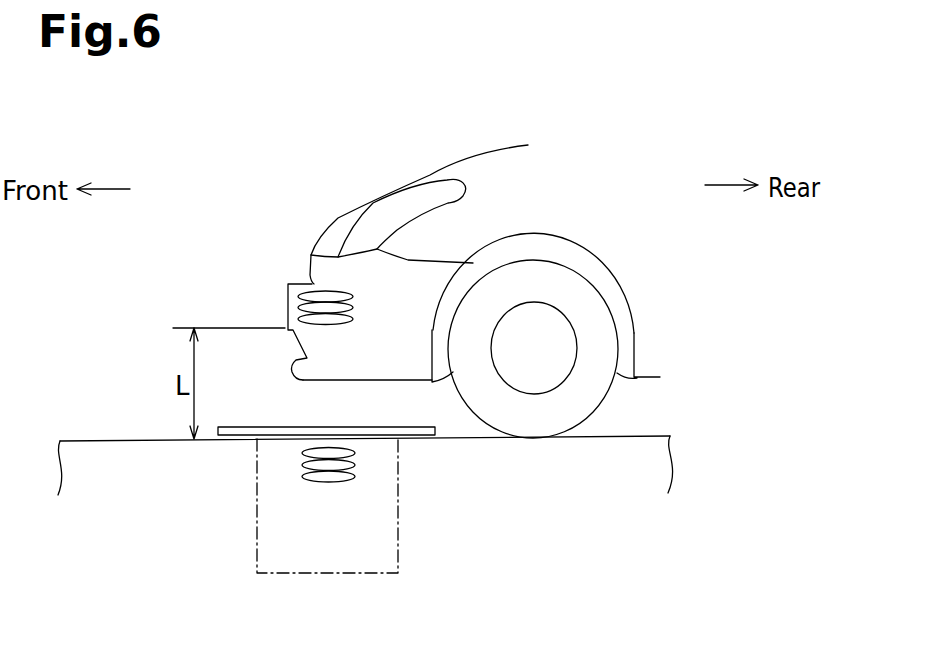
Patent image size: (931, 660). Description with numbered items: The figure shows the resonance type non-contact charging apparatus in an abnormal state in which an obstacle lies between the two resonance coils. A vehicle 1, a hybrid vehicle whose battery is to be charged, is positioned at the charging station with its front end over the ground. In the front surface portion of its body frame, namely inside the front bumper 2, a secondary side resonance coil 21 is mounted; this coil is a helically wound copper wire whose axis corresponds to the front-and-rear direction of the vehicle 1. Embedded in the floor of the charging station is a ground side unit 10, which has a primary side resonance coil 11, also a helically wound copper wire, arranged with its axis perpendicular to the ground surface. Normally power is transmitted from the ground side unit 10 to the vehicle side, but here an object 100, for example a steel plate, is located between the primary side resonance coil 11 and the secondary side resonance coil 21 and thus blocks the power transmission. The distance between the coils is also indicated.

The vehicle 1 is at (473, 152).
The front bumper (vehicle-side power receiving unit) 2 is at (287, 305).
The secondary side resonance coil 21 is at (310, 281).
The object 100 is at (238, 427).
The ground side unit 10 is at (398, 537).
The primary side resonance coil 11 is at (355, 474).